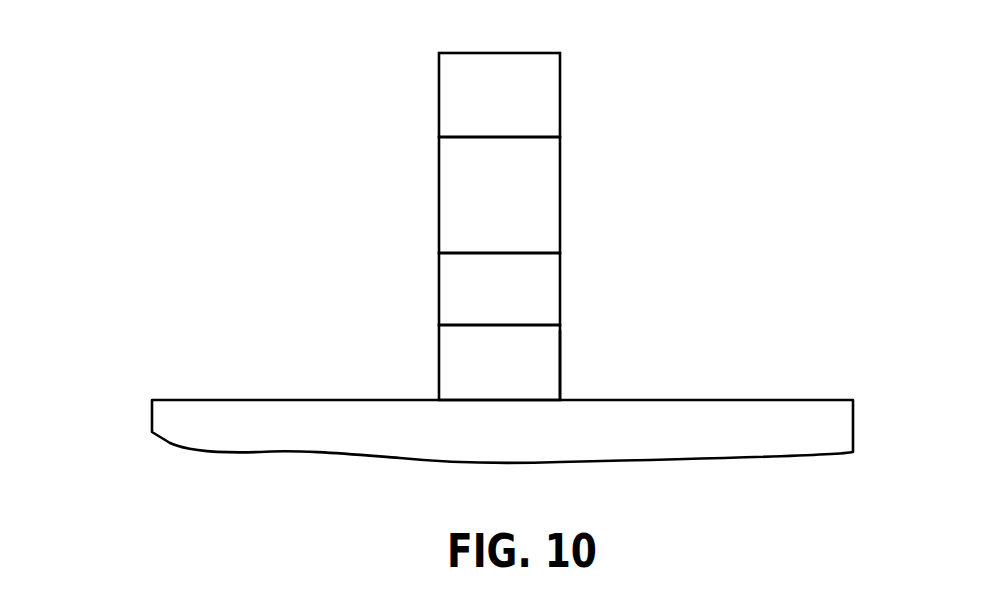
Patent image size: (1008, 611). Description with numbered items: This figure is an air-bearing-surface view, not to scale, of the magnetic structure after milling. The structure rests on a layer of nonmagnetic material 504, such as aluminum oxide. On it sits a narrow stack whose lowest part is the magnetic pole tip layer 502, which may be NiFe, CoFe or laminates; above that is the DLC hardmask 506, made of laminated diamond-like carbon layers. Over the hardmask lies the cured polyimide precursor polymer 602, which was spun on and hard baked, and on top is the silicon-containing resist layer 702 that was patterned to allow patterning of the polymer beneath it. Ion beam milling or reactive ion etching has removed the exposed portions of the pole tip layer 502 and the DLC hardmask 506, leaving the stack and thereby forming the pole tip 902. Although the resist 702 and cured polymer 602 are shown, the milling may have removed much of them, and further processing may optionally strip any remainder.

The layer of nonmagnetic material 504 is at (152, 431).
The magnetic pole tip layer 502 is at (439, 362).
The DLC hardmask 506 is at (439, 282).
The polyimide precursor polymer 602 is at (439, 192).
The silicon-containing resist layer 702 is at (439, 108).
The pole tip 902 is at (603, 362).